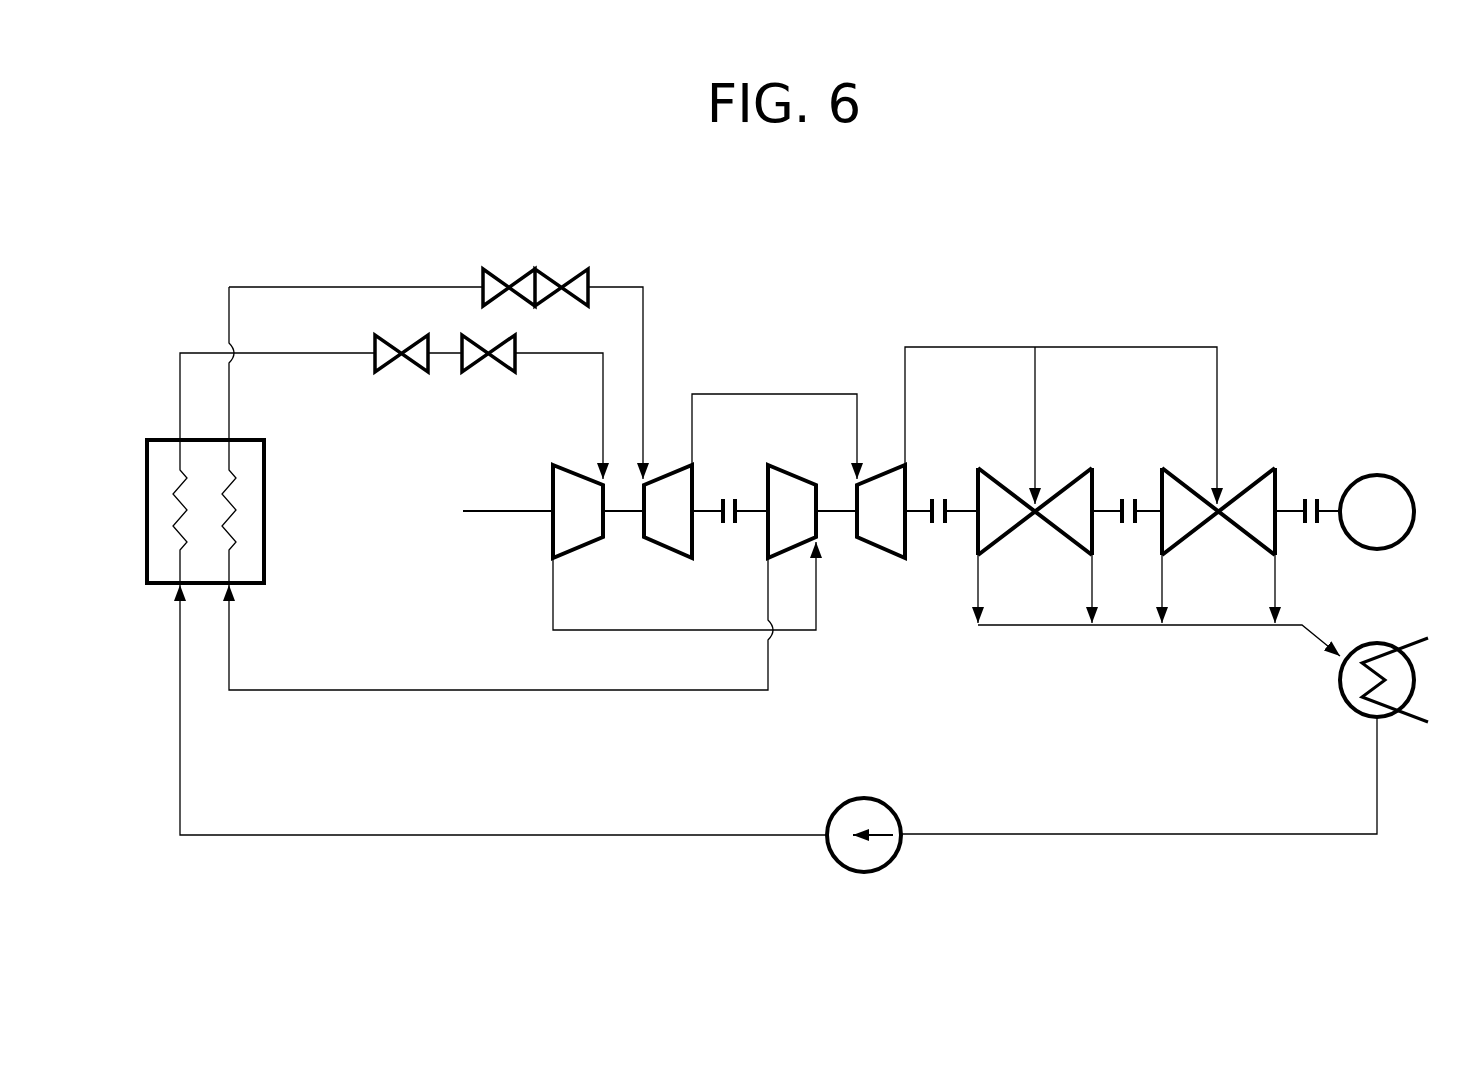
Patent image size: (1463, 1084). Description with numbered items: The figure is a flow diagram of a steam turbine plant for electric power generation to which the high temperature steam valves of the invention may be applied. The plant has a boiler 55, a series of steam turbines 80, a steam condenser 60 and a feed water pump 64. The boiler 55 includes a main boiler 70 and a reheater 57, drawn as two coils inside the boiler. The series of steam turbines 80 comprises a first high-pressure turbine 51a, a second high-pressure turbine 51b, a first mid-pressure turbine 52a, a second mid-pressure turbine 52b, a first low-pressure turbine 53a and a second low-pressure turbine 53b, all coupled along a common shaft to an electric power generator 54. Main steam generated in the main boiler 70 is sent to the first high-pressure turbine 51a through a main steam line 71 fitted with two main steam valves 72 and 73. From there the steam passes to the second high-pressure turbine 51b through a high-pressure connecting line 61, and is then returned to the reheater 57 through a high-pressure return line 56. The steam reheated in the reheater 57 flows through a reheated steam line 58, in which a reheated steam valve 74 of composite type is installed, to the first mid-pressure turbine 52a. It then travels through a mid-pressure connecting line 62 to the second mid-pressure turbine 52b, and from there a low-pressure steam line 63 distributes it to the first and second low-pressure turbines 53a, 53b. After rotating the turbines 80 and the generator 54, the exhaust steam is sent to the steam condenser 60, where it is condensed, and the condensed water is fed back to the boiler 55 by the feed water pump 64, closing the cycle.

The first high-pressure turbine 51a is at (553, 537).
The second high-pressure turbine 51b is at (772, 530).
The first mid-pressure turbine 52a is at (672, 538).
The second mid-pressure turbine 52b is at (882, 532).
The first low-pressure turbine 53a is at (1068, 522).
The second low-pressure turbine 53b is at (1252, 522).
The electric power generator 54 is at (1403, 486).
The boiler 55 is at (289, 480).
The high-pressure return line 56 is at (497, 690).
The reheater 57 is at (232, 538).
The reheated steam line 58 is at (643, 318).
The steam condenser 60 is at (1350, 698).
The high-pressure connecting line 61 is at (628, 630).
The mid-pressure connecting line 62 is at (748, 393).
The low-pressure steam line 63 is at (990, 347).
The feed water pump 64 is at (865, 806).
The main boiler 70 is at (178, 538).
The main steam line 71 is at (303, 355).
The main steam valve 72 is at (402, 355).
The main steam valve 73 is at (488, 355).
The reheated steam valve 74 is at (540, 268).
The series of steam turbines 80 is at (1252, 328).